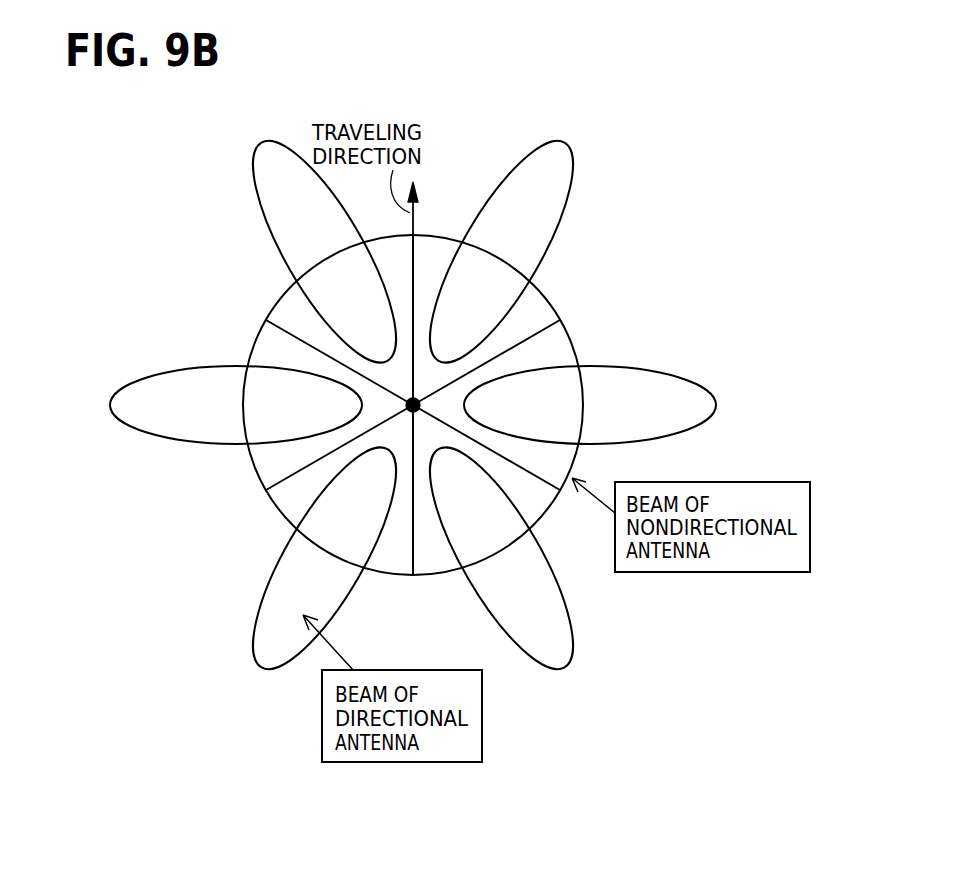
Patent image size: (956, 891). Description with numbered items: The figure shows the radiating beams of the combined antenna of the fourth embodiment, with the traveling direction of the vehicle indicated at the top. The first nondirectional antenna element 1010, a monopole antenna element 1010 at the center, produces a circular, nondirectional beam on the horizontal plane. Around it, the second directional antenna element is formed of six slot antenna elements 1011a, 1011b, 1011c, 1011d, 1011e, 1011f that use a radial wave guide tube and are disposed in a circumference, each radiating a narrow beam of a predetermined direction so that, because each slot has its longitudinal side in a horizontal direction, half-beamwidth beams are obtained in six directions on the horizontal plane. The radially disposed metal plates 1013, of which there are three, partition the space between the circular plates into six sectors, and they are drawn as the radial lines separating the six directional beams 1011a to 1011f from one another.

The first nondirectional antenna element 1010 is at (415, 403).
The slot antenna element 1011a is at (571, 193).
The slot antenna element 1011b is at (683, 377).
The slot antenna element 1011c is at (570, 610).
The slot antenna element 1011d is at (262, 610).
The slot antenna element 1011e is at (143, 380).
The slot antenna element 1011f is at (254, 195).
The metal plate 1013 is at (416, 262).